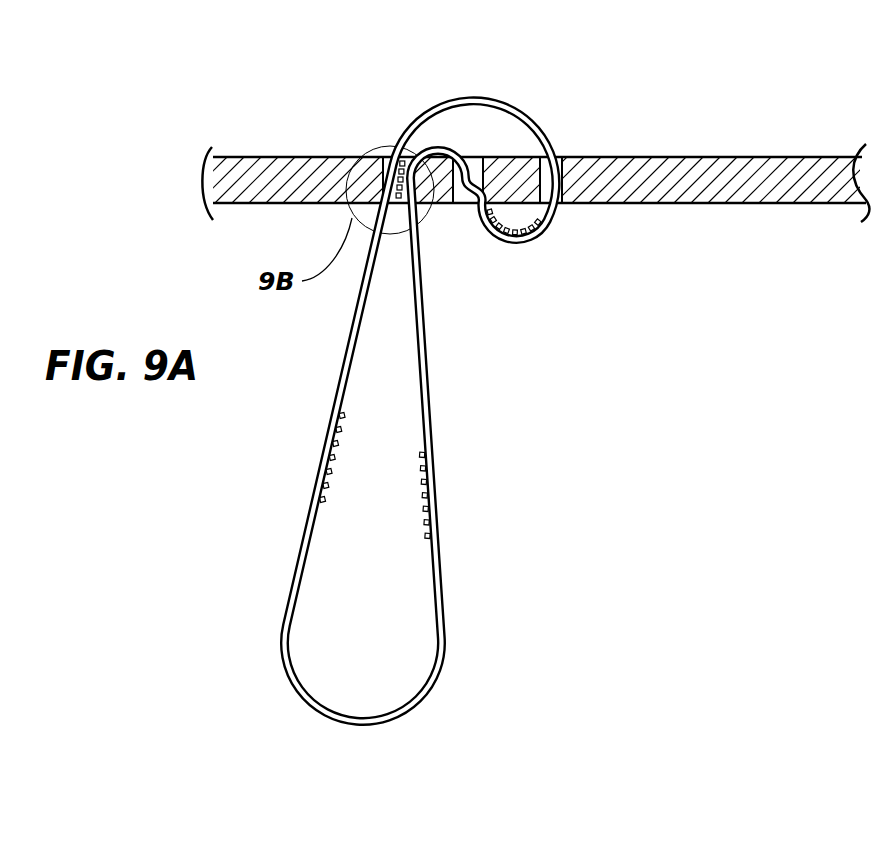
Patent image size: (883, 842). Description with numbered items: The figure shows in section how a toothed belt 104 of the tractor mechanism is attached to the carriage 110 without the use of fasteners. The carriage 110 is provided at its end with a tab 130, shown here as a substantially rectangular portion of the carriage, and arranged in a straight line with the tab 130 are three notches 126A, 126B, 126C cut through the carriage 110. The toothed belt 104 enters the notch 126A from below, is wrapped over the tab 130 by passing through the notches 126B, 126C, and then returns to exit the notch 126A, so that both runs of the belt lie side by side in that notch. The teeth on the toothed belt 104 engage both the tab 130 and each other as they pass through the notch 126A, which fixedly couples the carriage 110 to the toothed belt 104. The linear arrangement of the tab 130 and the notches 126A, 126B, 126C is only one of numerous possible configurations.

The toothed belt 104 is at (435, 483).
The carriage 110 is at (767, 160).
The notch 126A is at (388, 153).
The notch 126B is at (465, 203).
The notch 126C is at (560, 157).
The tab 130 is at (495, 160).